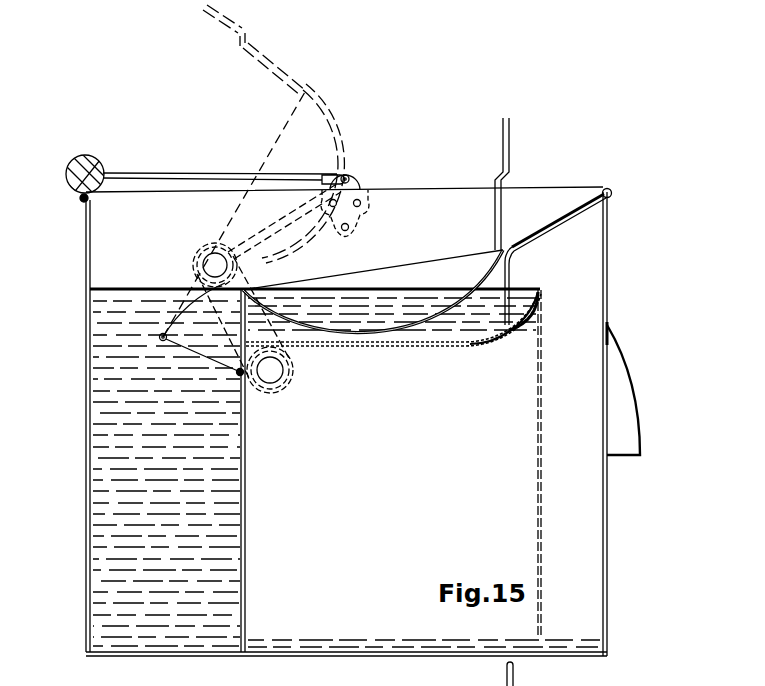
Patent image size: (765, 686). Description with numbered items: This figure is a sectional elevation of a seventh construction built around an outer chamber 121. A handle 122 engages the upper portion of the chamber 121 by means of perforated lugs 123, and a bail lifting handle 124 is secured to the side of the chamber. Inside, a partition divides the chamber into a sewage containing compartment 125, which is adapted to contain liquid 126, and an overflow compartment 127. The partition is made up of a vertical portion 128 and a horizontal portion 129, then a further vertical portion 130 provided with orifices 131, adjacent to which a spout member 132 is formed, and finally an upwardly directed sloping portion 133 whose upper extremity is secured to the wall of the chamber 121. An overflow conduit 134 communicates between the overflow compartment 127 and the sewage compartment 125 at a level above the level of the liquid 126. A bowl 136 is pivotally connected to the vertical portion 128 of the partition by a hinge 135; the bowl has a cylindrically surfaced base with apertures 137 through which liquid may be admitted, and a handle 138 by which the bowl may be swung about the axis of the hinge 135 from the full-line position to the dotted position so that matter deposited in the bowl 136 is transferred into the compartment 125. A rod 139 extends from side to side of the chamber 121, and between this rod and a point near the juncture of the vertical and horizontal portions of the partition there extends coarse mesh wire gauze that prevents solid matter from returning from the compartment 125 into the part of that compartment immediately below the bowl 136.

The outer chamber 121 is at (606, 300).
The handle 122 is at (165, 172).
The perforated lugs 123 is at (357, 178).
The bail lifting handle 124 is at (618, 447).
The sewage containing compartment 125 is at (107, 550).
The liquid 126 is at (108, 380).
The overflow compartment 127 is at (587, 588).
The vertical portion 128 is at (247, 543).
The horizontal portion 129 is at (377, 344).
The further vertical portion 130 is at (512, 272).
The orifices 131 is at (508, 330).
The spout member 132 is at (525, 327).
The upwardly directed sloping portion 133 is at (553, 220).
The overflow conduit 134 is at (205, 263).
The hinge 135 is at (250, 387).
The bowl 136 is at (483, 300).
The apertures 137 is at (440, 340).
The handle 138 is at (250, 34).
The rod 139 is at (282, 265).